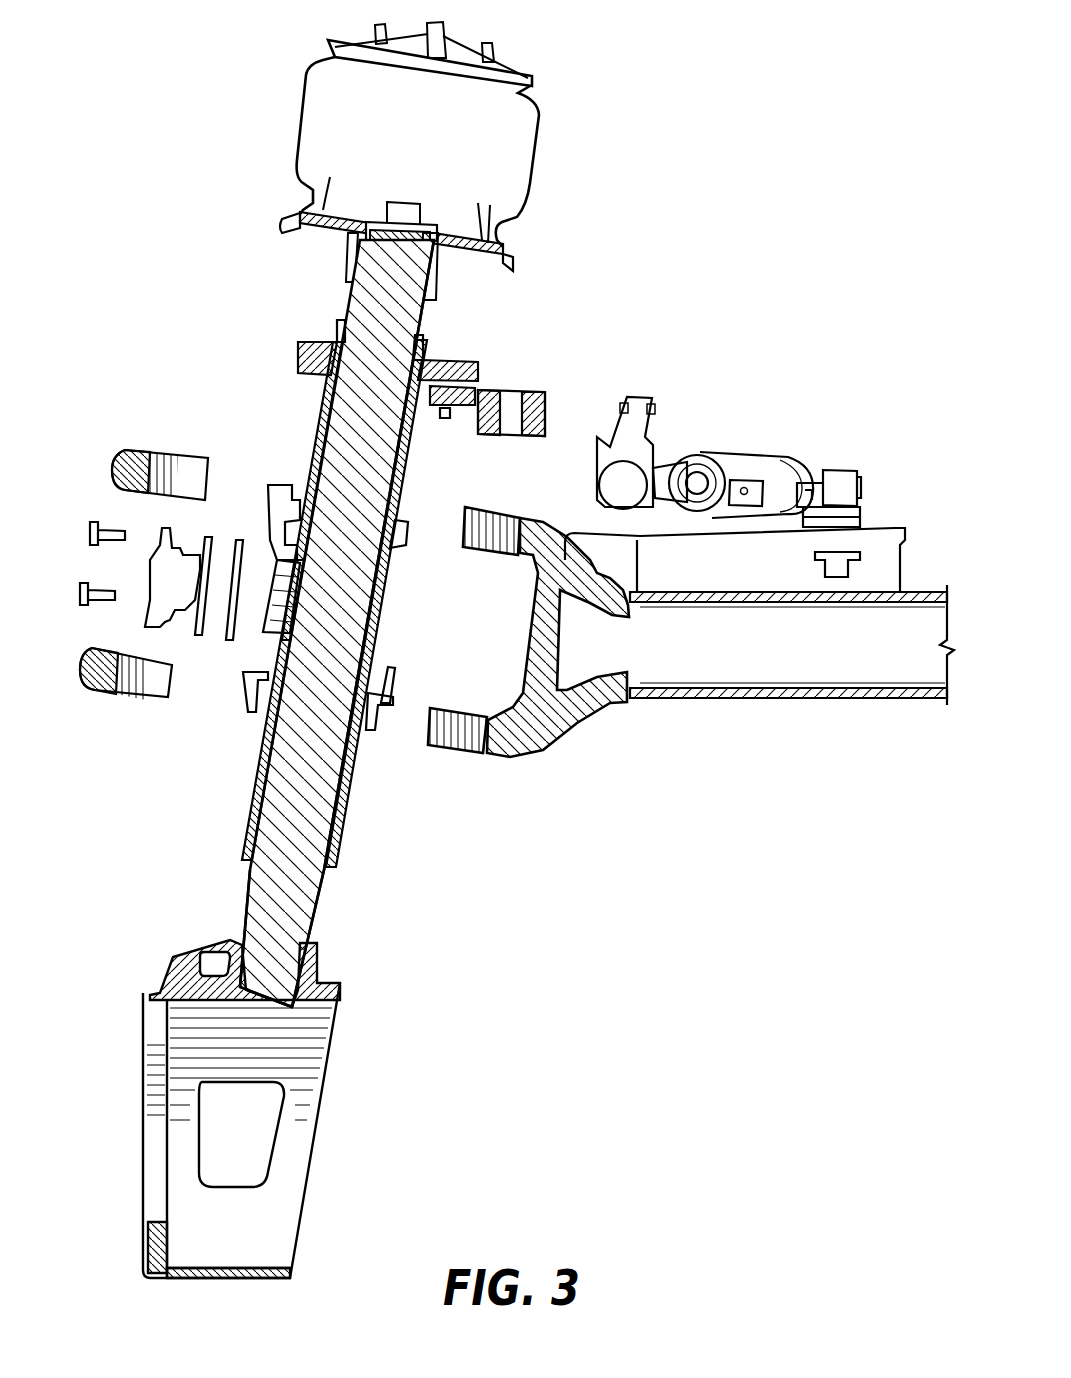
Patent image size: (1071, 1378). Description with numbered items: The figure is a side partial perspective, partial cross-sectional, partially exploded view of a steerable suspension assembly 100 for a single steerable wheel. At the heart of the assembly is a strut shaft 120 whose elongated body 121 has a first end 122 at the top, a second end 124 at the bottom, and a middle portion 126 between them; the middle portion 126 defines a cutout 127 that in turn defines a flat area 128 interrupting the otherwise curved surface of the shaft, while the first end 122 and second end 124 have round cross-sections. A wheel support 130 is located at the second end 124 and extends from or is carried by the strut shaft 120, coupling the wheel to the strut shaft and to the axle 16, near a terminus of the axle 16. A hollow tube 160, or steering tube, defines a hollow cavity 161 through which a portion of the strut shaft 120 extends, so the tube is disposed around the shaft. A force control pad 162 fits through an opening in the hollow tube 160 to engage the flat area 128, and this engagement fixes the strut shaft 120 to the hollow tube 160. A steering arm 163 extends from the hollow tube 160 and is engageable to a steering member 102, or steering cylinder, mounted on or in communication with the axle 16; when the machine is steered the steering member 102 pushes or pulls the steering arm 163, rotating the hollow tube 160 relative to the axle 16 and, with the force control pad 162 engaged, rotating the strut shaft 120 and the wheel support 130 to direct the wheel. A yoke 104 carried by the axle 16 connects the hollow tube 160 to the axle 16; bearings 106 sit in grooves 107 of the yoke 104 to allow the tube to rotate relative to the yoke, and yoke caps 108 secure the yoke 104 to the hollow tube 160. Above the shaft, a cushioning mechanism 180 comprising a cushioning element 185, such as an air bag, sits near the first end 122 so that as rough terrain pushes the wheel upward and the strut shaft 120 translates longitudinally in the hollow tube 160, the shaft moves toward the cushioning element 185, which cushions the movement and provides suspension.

The steerable suspension assembly 100 is at (180, 106).
The axle 16 is at (750, 672).
The steering member 102 is at (757, 470).
The yoke 104 is at (535, 725).
The bearings 106 is at (372, 718).
The grooves 107 is at (490, 520).
The yoke caps 108 is at (175, 470).
The strut shaft 120 is at (300, 875).
The elongated body 121 is at (256, 908).
The first end 122 is at (385, 260).
The second end 124 is at (272, 990).
The middle portion 126 is at (343, 620).
The cutout 127 is at (348, 752).
The flat area 128 is at (278, 585).
The wheel support 130 is at (297, 1072).
The hollow tube 160 is at (250, 810).
The hollow cavity 161 is at (318, 430).
The force control pad 162 is at (172, 598).
The steering arm 163 is at (540, 393).
The cushioning mechanism 180 is at (503, 122).
The cushioning element 185 is at (500, 178).